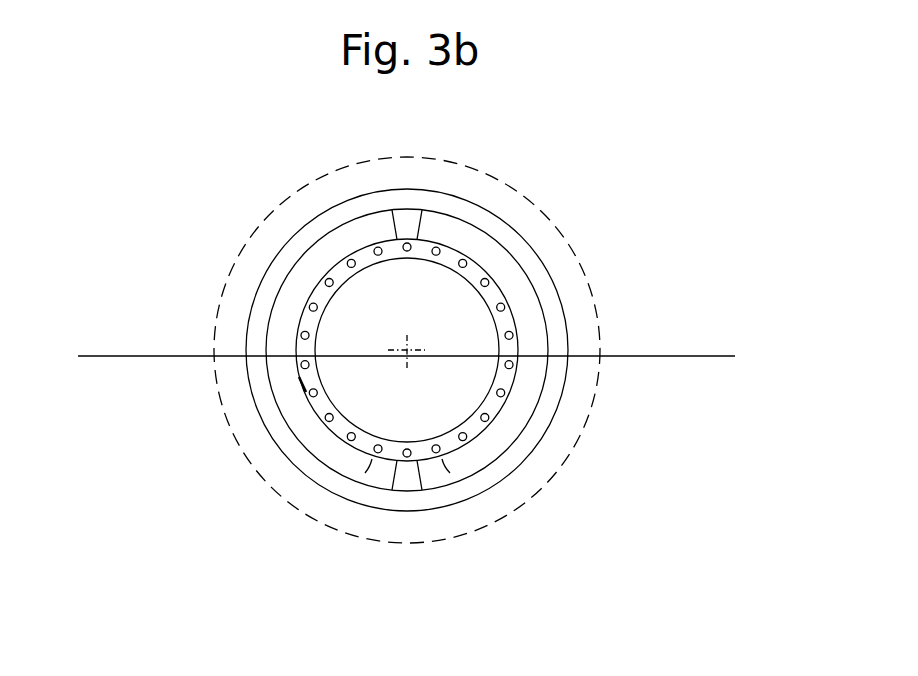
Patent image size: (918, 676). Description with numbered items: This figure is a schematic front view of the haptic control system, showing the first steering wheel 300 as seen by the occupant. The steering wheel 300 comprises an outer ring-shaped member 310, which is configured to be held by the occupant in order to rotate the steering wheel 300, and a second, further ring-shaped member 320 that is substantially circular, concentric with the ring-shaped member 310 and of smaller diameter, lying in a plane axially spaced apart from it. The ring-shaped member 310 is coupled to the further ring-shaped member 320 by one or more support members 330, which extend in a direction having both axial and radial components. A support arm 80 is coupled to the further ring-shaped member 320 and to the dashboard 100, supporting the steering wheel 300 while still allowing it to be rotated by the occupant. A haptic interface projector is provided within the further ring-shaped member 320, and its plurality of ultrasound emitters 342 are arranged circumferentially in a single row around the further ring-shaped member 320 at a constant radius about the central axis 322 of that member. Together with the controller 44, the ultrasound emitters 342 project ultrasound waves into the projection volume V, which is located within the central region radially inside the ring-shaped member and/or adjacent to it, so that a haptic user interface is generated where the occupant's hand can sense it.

The dashboard 100 is at (697, 357).
The projection volume V is at (578, 258).
The first steering wheel 300 is at (210, 243).
The ring-shaped member 310 is at (508, 226).
The further ring-shaped member 320 is at (342, 258).
The central axis 322 is at (410, 348).
The support members 330 is at (425, 482).
The ultrasound emitters 342 is at (437, 248).
The support arm 80 is at (368, 473).
The controller 44 is at (297, 384).